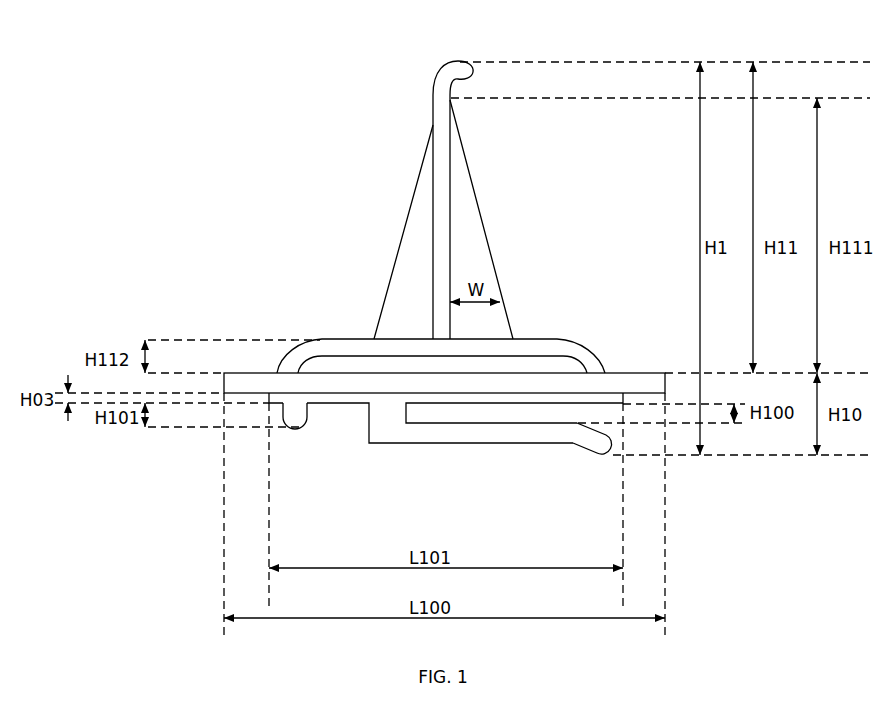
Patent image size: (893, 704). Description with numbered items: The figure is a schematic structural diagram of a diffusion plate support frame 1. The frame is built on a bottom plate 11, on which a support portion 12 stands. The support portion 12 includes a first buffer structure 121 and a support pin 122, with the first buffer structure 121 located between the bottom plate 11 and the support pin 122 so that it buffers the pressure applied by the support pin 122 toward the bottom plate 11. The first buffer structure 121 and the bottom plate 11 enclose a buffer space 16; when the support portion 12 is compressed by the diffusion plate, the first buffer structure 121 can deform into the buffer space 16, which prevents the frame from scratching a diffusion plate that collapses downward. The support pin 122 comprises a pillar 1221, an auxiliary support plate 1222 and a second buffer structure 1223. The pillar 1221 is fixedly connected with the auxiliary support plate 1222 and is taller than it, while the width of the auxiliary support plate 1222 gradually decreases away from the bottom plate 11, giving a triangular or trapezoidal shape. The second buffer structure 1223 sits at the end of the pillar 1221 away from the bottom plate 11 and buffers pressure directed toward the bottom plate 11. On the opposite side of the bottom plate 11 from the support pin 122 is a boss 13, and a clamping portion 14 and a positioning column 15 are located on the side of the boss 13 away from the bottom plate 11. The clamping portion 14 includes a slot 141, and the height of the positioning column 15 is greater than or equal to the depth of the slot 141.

The diffusion plate support frame 1 is at (463, 44).
The bottom plate 11 is at (620, 384).
The support portion 12 is at (636, 158).
The first buffer structure 121 is at (557, 345).
The support pin 122 is at (586, 79).
The pillar 1221 is at (447, 163).
The auxiliary support plate 1222 is at (482, 223).
The second buffer structure 1223 is at (470, 76).
The boss 13 is at (505, 398).
The clamping portion 14 is at (420, 438).
The slot 141 is at (463, 412).
The positioning column 15 is at (301, 428).
The buffer space 16 is at (363, 366).